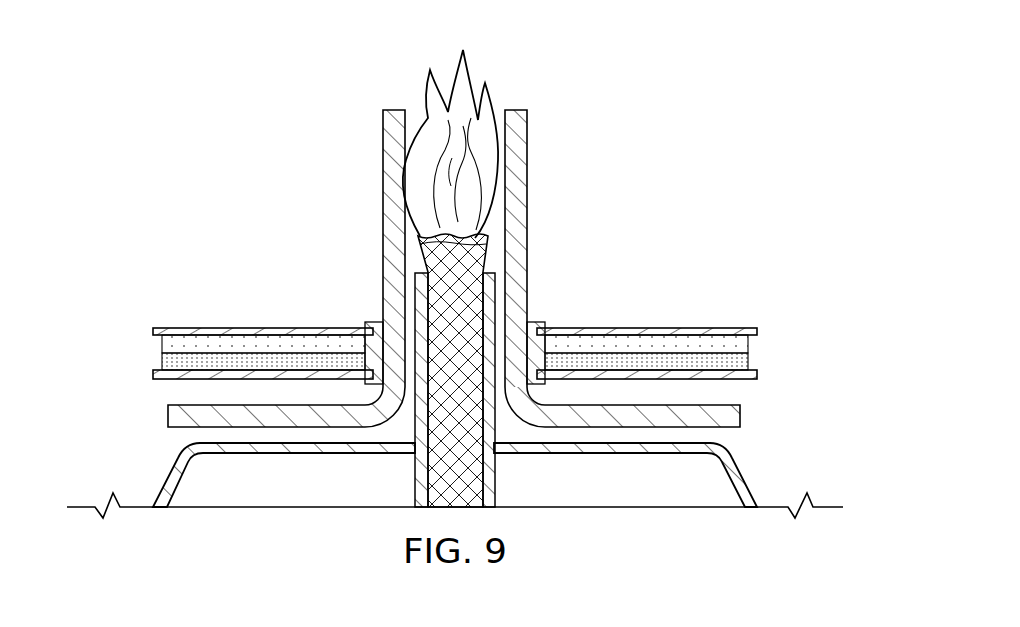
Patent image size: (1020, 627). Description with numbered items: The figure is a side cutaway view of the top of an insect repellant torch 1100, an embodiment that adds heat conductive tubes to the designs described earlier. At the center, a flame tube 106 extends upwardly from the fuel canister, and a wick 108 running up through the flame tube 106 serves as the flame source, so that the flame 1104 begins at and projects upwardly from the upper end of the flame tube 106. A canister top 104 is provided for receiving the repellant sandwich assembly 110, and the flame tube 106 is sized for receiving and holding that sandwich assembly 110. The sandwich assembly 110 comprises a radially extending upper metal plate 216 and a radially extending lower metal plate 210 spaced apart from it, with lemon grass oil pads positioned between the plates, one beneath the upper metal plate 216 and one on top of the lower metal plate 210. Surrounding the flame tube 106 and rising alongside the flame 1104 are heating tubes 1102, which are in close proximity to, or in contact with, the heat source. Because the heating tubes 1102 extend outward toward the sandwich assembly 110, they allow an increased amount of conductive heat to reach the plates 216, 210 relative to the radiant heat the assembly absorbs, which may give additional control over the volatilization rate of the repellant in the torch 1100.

The canister top 104 is at (740, 463).
The flame tube 106 is at (417, 413).
The wick 108 is at (483, 478).
The repellant sandwich assembly 110 is at (655, 311).
The lower metal plate 210 is at (173, 379).
The upper metal plate 216 is at (187, 328).
The insect repellant torch 1100 is at (630, 122).
The heating tubes 1102 is at (383, 188).
The flame 1104 is at (496, 96).